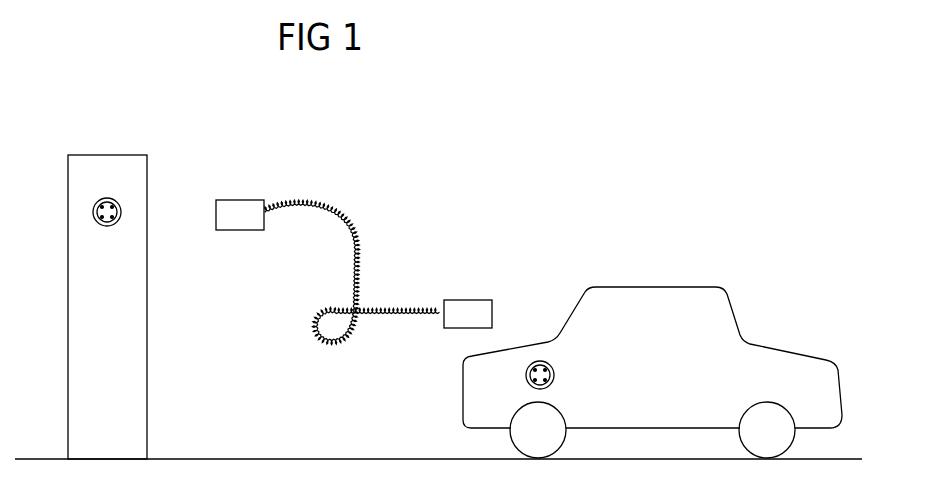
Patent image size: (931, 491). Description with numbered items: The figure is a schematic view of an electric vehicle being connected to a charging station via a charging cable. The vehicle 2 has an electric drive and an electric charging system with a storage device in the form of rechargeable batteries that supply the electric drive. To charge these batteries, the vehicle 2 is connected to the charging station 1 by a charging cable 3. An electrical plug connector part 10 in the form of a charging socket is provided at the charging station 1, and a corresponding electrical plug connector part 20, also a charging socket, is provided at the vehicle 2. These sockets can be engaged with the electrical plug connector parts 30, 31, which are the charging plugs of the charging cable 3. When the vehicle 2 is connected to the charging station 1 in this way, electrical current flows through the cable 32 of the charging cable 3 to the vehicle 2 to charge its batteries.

The charging station 1 is at (94, 257).
The electrical plug connector part 10 is at (96, 222).
The vehicle 2 is at (622, 321).
The electrical plug connector part 20 is at (527, 382).
The charging cable 3 is at (354, 239).
The electrical plug connector part 30 is at (228, 218).
The electrical plug connector part 31 is at (472, 308).
The cable 32 is at (339, 226).